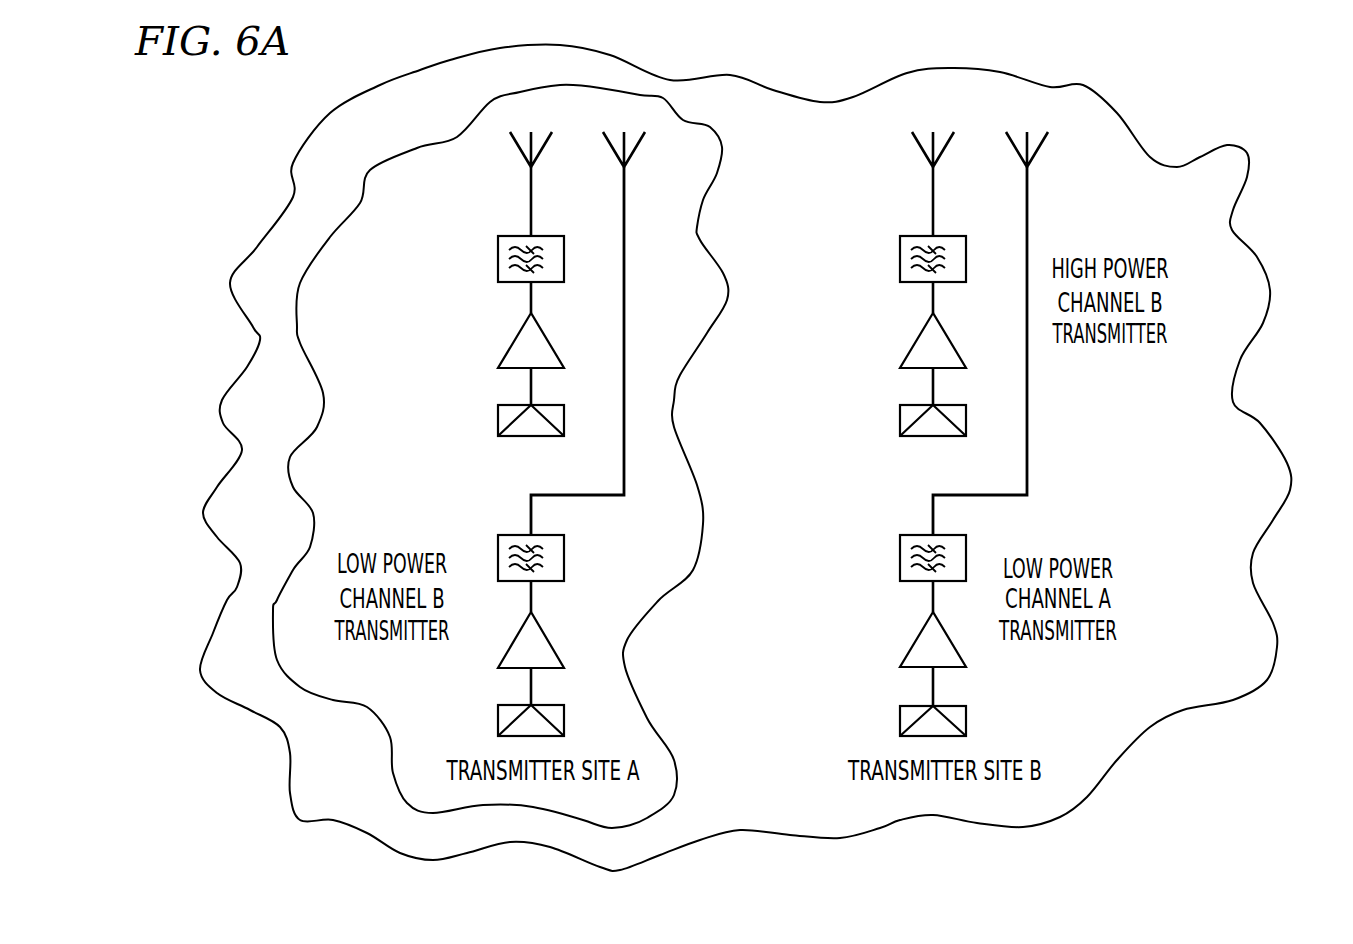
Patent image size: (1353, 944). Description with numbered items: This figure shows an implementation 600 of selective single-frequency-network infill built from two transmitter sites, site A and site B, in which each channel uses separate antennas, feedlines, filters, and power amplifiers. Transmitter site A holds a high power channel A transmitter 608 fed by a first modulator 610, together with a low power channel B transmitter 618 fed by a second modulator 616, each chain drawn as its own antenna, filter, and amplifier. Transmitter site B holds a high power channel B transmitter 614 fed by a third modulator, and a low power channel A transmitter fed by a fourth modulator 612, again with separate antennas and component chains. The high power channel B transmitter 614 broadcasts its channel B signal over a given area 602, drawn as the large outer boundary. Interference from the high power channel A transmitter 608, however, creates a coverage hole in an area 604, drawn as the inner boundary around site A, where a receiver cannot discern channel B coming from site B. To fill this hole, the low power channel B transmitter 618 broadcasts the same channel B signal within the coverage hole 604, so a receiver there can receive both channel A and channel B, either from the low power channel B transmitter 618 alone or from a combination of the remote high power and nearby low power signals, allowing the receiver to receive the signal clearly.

The implementation 600 is at (765, 455).
The given area 602 is at (1253, 243).
The coverage hole area 604 is at (703, 237).
The high power channel A transmitter 608 is at (458, 268).
The first modulator 610 is at (498, 419).
The fourth modulator 612 is at (900, 714).
The high power channel B transmitter 614 is at (918, 150).
The second modulator 616 is at (498, 717).
The low power channel B transmitter 618 is at (627, 285).